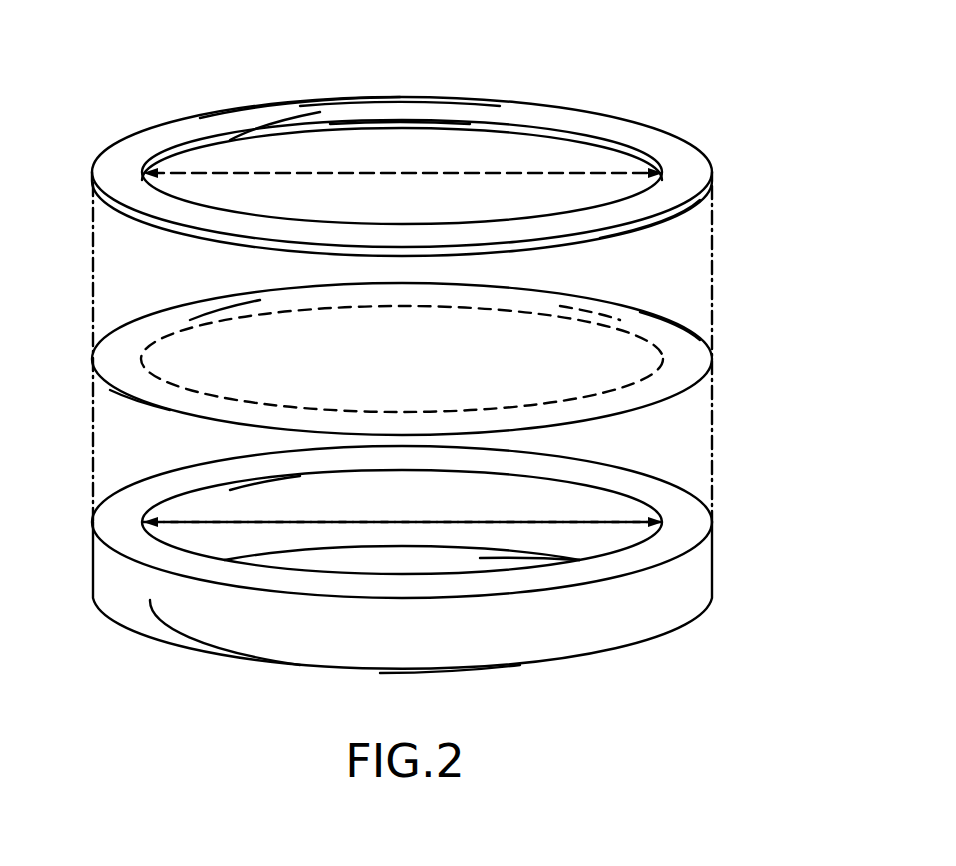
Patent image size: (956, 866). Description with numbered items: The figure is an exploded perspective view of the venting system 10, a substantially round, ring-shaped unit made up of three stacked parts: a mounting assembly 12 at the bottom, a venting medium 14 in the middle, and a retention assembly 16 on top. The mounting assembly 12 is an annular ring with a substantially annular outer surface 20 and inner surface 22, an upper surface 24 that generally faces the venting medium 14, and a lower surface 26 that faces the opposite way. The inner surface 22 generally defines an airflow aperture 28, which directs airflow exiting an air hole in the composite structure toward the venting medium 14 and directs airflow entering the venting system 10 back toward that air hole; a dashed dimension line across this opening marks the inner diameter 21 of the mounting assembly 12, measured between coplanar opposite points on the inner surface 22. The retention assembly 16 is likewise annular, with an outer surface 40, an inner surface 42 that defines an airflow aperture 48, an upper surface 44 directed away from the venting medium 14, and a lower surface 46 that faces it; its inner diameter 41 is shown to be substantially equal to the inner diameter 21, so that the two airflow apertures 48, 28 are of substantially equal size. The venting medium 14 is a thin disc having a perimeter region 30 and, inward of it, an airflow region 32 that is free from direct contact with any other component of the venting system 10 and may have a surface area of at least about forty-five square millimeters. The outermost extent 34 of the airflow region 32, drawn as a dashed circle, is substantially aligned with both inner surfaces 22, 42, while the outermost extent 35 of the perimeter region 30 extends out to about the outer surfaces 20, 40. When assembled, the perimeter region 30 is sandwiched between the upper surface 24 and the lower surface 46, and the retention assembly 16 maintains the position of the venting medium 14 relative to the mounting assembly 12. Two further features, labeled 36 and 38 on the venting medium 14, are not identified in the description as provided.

The venting system 10 is at (766, 70).
The mounting assembly 12 is at (705, 568).
The venting medium 14 is at (419, 369).
The retention assembly 16 is at (692, 167).
The outer surface 20 is at (240, 637).
The inner diameter 21 is at (377, 527).
The inner surface 22 is at (266, 490).
The upper surface 24 is at (115, 523).
The lower surface 26 is at (440, 675).
The airflow aperture 28 is at (517, 558).
The perimeter region 30 is at (684, 361).
The airflow region 32 is at (226, 342).
The outermost extent of the airflow region 34 is at (603, 325).
The outermost extent of the perimeter region 35 is at (682, 325).
The central region of disc 36 is at (180, 352).
The periphery of disc 38 is at (157, 405).
The outer surface 40 is at (658, 216).
The inner diameter 41 is at (403, 176).
The inner surface 42 is at (558, 134).
The upper surface 44 is at (324, 110).
The lower surface 46 is at (421, 128).
The airflow aperture 48 is at (277, 153).